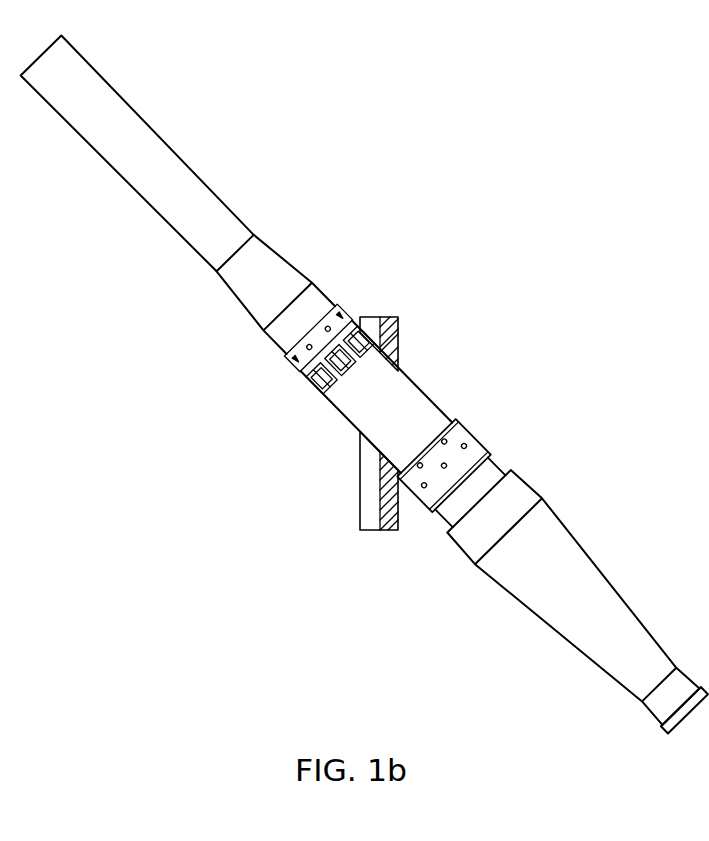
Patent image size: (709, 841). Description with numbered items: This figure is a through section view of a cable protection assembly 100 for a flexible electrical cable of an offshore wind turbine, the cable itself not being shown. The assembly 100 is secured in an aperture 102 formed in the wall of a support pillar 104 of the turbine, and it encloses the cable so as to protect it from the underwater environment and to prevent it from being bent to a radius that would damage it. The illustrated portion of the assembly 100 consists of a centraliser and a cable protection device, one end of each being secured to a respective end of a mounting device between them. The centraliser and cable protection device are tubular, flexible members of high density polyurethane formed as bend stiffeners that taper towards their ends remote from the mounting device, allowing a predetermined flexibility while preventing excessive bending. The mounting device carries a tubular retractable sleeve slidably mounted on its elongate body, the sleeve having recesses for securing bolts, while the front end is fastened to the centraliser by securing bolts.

The cable protection assembly 100 is at (590, 210).
The aperture 102 is at (382, 453).
The support pillar 104 is at (374, 532).